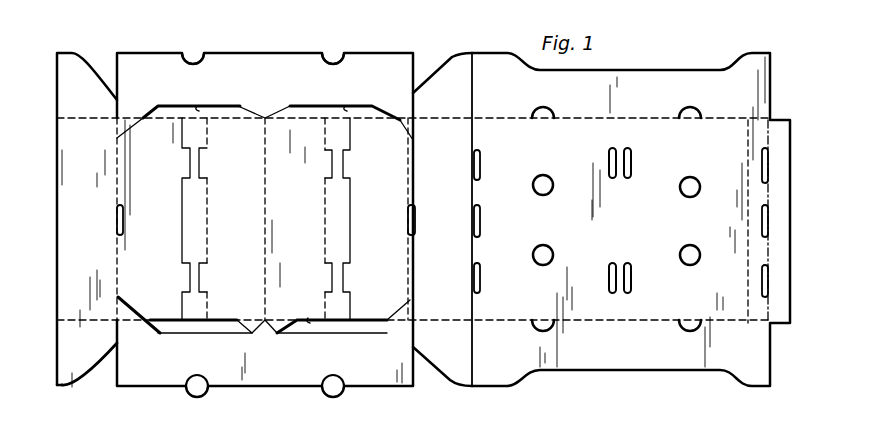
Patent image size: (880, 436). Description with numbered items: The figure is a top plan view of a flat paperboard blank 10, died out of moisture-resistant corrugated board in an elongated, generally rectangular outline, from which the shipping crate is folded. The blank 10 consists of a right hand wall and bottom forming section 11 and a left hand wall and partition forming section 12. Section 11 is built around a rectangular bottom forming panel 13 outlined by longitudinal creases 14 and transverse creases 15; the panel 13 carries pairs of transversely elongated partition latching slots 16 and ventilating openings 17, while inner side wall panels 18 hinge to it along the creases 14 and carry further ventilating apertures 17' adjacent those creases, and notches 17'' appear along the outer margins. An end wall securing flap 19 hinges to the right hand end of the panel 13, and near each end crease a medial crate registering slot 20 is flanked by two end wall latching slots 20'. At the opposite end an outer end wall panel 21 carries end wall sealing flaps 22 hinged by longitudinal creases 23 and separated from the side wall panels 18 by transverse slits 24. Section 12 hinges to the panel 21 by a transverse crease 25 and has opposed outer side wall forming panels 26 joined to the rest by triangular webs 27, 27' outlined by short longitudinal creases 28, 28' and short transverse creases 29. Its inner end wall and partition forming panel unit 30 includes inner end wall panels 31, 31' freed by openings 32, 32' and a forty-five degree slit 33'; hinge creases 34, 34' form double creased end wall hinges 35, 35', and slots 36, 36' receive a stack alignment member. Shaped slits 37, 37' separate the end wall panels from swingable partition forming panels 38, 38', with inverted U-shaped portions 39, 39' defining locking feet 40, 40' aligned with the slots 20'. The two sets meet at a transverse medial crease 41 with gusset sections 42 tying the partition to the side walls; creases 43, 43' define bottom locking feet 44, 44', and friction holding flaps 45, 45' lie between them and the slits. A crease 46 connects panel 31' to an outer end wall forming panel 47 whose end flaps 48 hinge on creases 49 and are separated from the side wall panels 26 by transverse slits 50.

The paperboard blank 10 is at (118, 398).
The right hand wall and bottom forming section 11 is at (586, 375).
The left hand wall and partition forming section 12 is at (360, 387).
The bottom forming panel 13 is at (650, 322).
The longitudinal creases 14 is at (577, 117).
The transverse creases 15 is at (478, 297).
The partition latching slots 16 is at (628, 262).
The ventilating openings 17 is at (616, 220).
The ventilating apertures 17' is at (638, 219).
The notches 17'' is at (260, 217).
The inner side wall panels 18 is at (672, 73).
The end wall securing flap 19 is at (752, 195).
The crate registering slot 20 is at (644, 248).
The end wall latching slots 20' is at (647, 189).
The outer end wall panel 21 is at (474, 133).
The end wall sealing flaps 22 is at (447, 63).
The longitudinal creases 23 is at (452, 318).
The transverse slits 24 is at (474, 92).
The transverse crease 25 is at (425, 183).
The outer side wall forming panels 26 is at (240, 55).
The triangular webs 27 is at (368, 212).
The triangular webs 27' is at (178, 188).
The short longitudinal creases 28 is at (390, 218).
The short longitudinal creases 28' is at (139, 328).
The short transverse creases 29 is at (440, 128).
The inner end wall and partition forming panel unit 30 is at (236, 329).
The inner end wall panel 31 is at (343, 330).
The inner end wall panel 31' is at (199, 333).
The opening 32 is at (324, 199).
The opening 32' is at (206, 93).
The slit 33' is at (150, 144).
The transverse hinge crease 34 is at (386, 219).
The transverse hinge crease 34' is at (148, 236).
The double creased end wall hinge 35 is at (448, 134).
The double creased end wall hinge 35' is at (96, 174).
The transversely elongated slot 36 is at (432, 217).
The transversely elongated slot 36' is at (97, 220).
The shaped slit 37 is at (365, 226).
The shaped slit 37' is at (158, 208).
The partition forming panel 38 is at (317, 102).
The partition forming panel 38' is at (243, 104).
The inverted U-shaped slit portions 39 is at (367, 251).
The inverted U-shaped slit portions 39' is at (188, 211).
The locking feet 40 is at (371, 206).
The locking feet 40' is at (160, 221).
The transverse medial crease 41 is at (271, 181).
The gusset sections 42 is at (282, 106).
The transverse creases 43 is at (334, 252).
The transverse creases 43' is at (224, 239).
The bottom locking feet 44 is at (317, 219).
The bottom locking feet 44' is at (218, 219).
The friction holding flap 45 is at (360, 176).
The friction holding flap 45' is at (227, 175).
The transverse hinge crease 46 is at (112, 255).
The outer end wall forming panel 47 is at (58, 207).
The end flaps 48 is at (62, 385).
The short longitudinal creases 49 is at (78, 112).
The transverse slits 50 is at (115, 102).